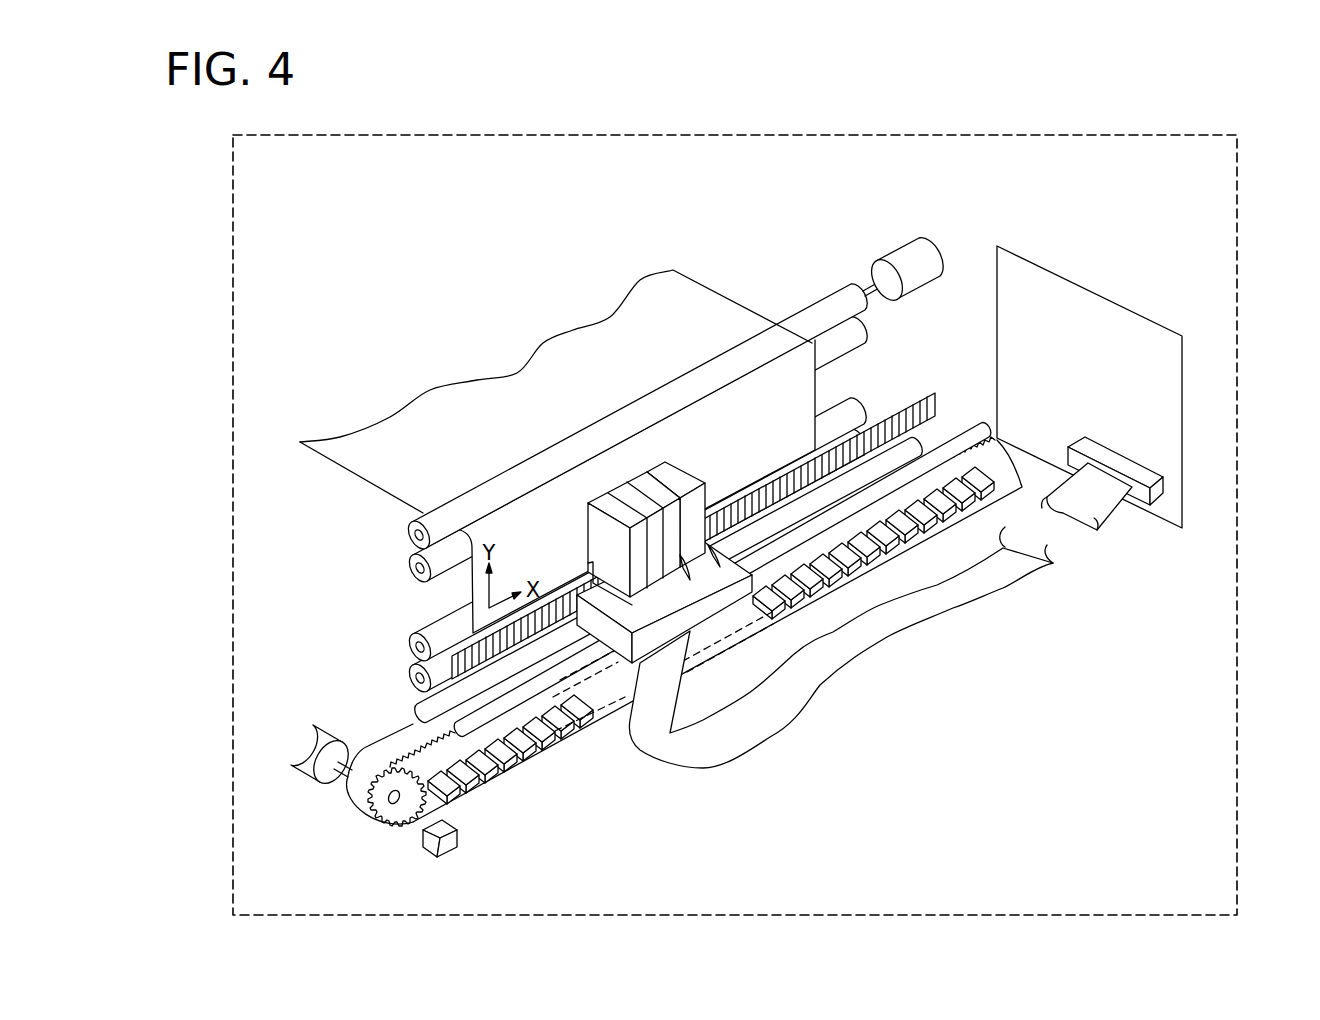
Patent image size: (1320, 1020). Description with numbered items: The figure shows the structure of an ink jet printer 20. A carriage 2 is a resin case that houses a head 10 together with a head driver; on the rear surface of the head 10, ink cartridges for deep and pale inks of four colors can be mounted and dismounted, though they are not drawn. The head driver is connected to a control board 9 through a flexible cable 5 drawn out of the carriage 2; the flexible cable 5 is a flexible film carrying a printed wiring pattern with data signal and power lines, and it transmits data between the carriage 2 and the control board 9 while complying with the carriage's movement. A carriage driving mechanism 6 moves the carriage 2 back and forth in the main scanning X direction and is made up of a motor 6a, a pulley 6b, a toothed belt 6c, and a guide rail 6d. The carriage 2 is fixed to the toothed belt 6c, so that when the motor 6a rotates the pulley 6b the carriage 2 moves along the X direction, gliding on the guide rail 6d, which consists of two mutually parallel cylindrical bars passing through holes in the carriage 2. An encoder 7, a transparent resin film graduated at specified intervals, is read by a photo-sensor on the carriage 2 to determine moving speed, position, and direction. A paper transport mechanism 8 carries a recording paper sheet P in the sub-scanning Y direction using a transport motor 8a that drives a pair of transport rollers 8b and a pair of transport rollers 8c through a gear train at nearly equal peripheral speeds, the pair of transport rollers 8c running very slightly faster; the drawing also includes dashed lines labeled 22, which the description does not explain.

The carriage 2 is at (578, 592).
The flexible cable 5 is at (960, 590).
The carriage driving mechanism 6 is at (654, 665).
The motor 6a is at (307, 764).
The pulley 6b is at (397, 827).
The toothed belt 6c is at (360, 796).
The guide rail 6d is at (455, 733).
The encoder 7 is at (905, 416).
The paper transport mechanism 8 is at (640, 446).
The transport motor 8a is at (915, 256).
The pair of transport rollers 8b is at (409, 678).
The pair of transport rollers 8c is at (409, 568).
The control board 9 is at (1103, 307).
The head 10 is at (658, 455).
The ink jet printer 20 is at (1240, 731).
The hidden belt run 22 is at (587, 752).
The recording paper sheet P is at (512, 390).